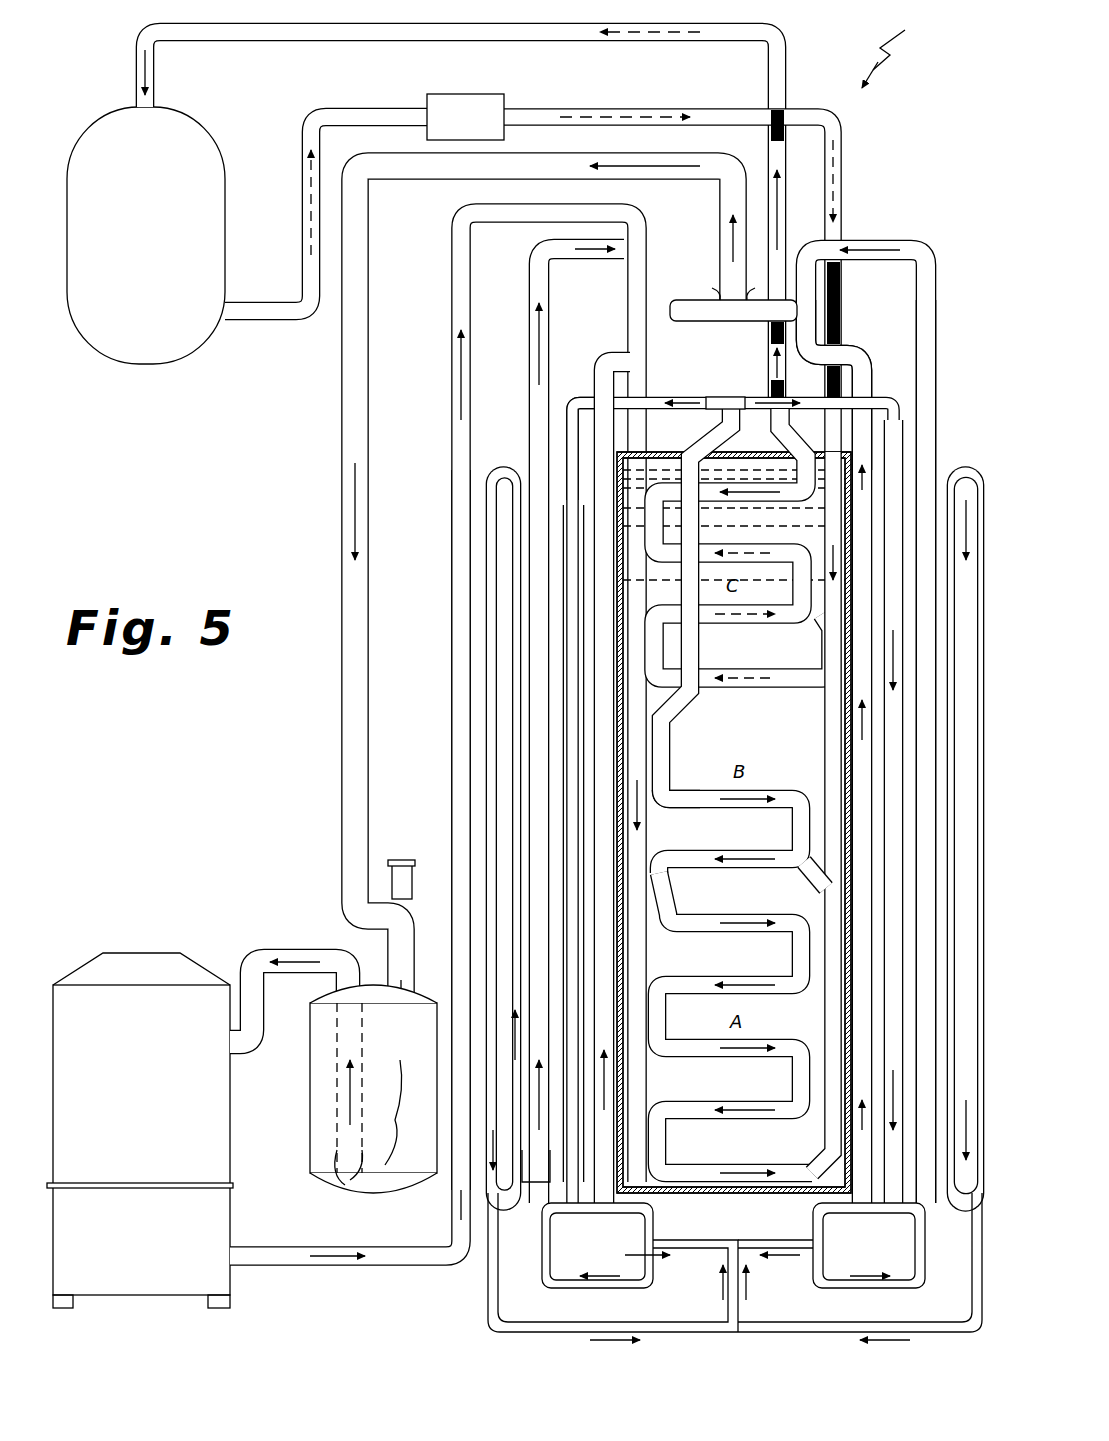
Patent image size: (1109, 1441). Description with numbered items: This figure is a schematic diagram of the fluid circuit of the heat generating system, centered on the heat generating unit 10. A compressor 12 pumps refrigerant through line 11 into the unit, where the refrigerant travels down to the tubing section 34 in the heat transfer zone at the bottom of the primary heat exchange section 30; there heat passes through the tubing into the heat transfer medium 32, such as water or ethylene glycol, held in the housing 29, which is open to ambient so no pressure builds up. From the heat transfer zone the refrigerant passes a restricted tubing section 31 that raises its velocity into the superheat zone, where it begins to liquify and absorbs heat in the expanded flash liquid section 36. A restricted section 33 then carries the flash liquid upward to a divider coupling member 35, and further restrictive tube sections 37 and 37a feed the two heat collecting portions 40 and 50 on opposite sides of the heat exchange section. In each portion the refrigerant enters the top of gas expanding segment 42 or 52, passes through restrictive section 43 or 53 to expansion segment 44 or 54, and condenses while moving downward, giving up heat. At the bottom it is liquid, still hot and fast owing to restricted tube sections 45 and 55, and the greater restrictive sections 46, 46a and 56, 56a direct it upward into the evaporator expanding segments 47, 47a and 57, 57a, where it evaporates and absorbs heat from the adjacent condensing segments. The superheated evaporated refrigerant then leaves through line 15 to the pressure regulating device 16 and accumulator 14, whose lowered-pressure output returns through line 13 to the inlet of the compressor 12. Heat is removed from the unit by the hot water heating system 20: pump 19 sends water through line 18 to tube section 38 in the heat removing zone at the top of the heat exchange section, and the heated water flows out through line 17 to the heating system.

The heat generating unit 10 is at (893, 51).
The line 11 is at (640, 442).
The compressor 12 is at (217, 1117).
The line 13 is at (263, 950).
The accumulator 14 is at (318, 1105).
The line 15 is at (343, 573).
The pressure regulating device 16 is at (412, 885).
The line 17 is at (355, 28).
The line 18 is at (340, 103).
The pump 19 is at (483, 95).
The hot water heating system 20 is at (163, 352).
The housing 29 is at (777, 1197).
The primary heat exchange section 30 is at (738, 1198).
The restricted tubing section 31 is at (830, 997).
The heat transfer medium 32 is at (802, 826).
The restricted section 33 is at (700, 662).
The tubing section 34 is at (680, 1056).
The divider coupling member 35 is at (735, 396).
The flash liquid section 36 is at (715, 777).
The restrictive tube section 37 is at (890, 403).
The restrictive tube section 37a is at (575, 400).
The tube section 38 is at (745, 545).
The heat collecting portion 40 is at (948, 435).
The gas expanding segment 42 is at (893, 1180).
The restrictive section 43 is at (935, 1195).
The expansion segment 44 is at (970, 770).
The restricted tube section 45 is at (790, 1333).
The restrictive section 46 is at (870, 1289).
The restrictive section 46a is at (850, 1207).
The evaporator expanding segment 47 is at (925, 240).
The evaporator expanding segment 47a is at (850, 365).
The heat collecting portion 50 is at (500, 445).
The gas expanding segment 52 is at (575, 1157).
The restrictive section 53 is at (520, 1212).
The expansion segment 54 is at (492, 630).
The restricted tube section 55 is at (565, 1333).
The restrictive section 56 is at (620, 1289).
The restrictive section 56a is at (632, 1207).
The evaporator expanding segment 57 is at (530, 276).
The evaporator expanding segment 57a is at (612, 355).